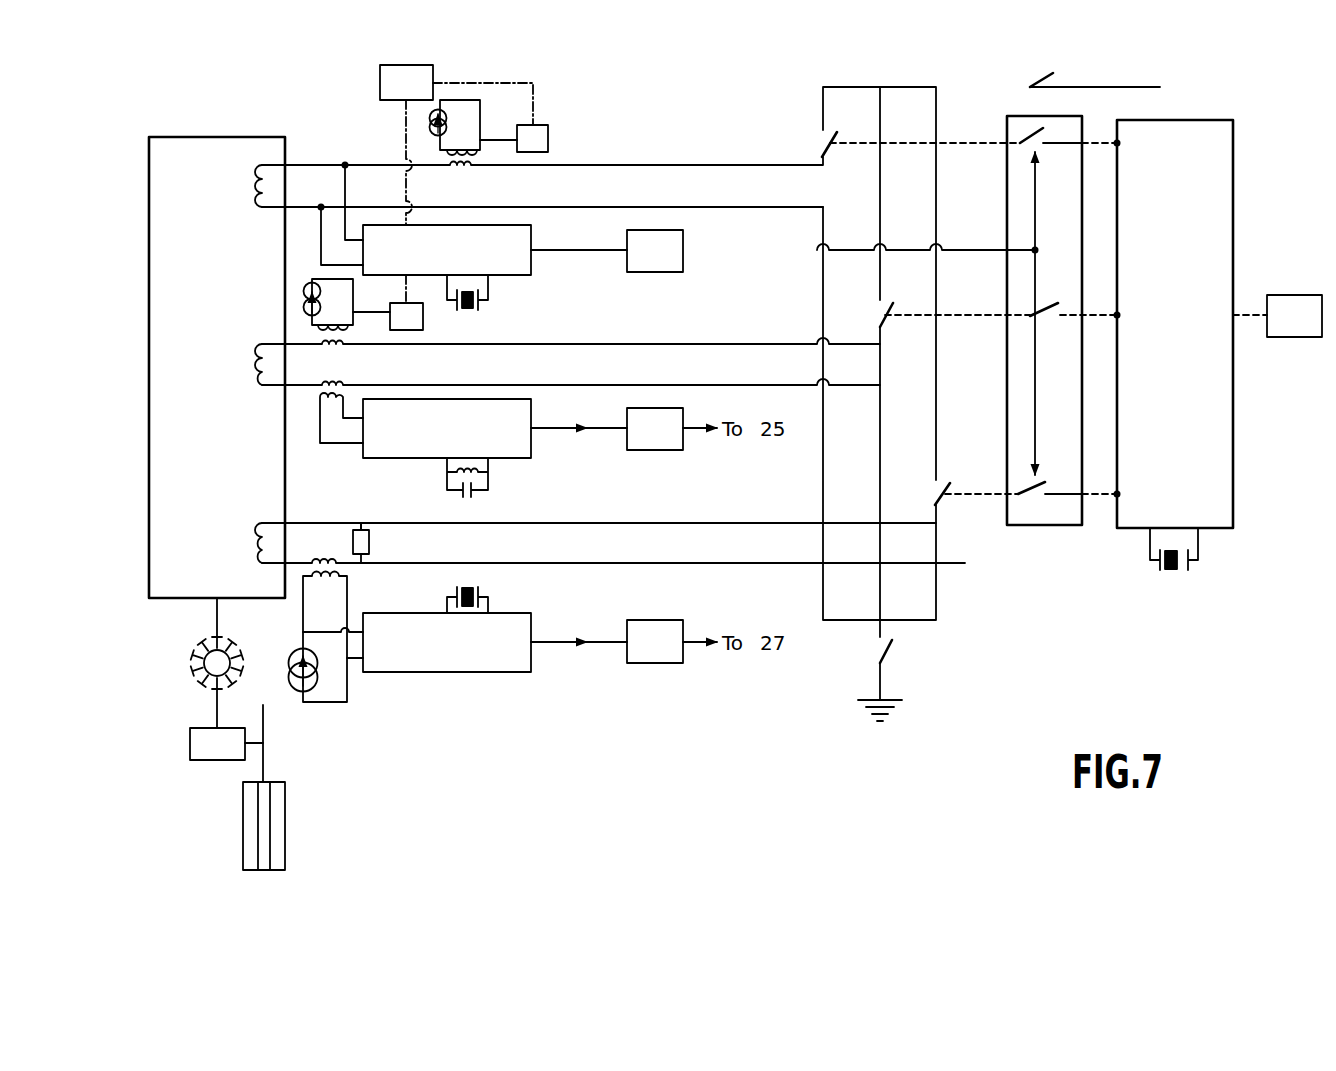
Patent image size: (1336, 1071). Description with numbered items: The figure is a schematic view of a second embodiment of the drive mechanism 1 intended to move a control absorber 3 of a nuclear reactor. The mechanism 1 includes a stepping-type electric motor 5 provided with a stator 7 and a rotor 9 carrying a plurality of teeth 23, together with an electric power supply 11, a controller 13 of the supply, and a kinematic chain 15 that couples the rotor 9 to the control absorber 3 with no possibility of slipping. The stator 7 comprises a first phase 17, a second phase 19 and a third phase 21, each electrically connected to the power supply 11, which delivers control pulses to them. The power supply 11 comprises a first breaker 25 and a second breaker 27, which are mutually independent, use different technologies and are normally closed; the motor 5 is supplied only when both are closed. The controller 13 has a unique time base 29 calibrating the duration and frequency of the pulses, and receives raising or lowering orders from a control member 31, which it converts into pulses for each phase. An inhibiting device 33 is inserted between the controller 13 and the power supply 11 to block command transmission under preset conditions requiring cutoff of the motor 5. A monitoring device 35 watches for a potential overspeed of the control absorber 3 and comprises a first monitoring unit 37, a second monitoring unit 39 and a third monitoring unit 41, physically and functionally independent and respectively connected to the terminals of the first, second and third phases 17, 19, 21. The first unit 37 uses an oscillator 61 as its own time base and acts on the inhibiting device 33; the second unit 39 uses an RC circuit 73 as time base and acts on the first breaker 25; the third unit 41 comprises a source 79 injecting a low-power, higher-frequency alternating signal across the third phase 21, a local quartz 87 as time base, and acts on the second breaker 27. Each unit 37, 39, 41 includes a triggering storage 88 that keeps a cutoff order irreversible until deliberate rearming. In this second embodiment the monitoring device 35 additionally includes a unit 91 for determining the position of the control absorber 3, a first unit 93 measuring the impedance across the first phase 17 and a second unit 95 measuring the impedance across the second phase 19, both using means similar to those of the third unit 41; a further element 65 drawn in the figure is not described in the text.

The drive mechanism 1 is at (697, 128).
The control absorber 3 is at (285, 826).
The electric motor 5 is at (128, 343).
The stator 7 is at (149, 490).
The rotor 9 is at (197, 663).
The electric power supply 11 is at (830, 632).
The controller 13 is at (1233, 220).
The kinematic chain 15 is at (190, 745).
The first phase 17 is at (258, 182).
The second phase 19 is at (258, 362).
The third phase 21 is at (258, 540).
The teeth 23 is at (240, 645).
The first breaker 25 is at (897, 653).
The second breaker 27 is at (1030, 80).
The time base 29 is at (1148, 553).
The control member 31 is at (1294, 316).
The inhibiting device 33 is at (1043, 527).
The monitoring device 35 is at (392, 693).
The first monitoring unit 37 is at (540, 237).
The second monitoring unit 39 is at (540, 412).
The third monitoring unit 41 is at (404, 612).
The oscillator 61 is at (490, 293).
The inductor 65 is at (315, 398).
The RC circuit 73 is at (490, 484).
The source 79 is at (330, 705).
The local quartz 87 is at (490, 598).
The triggering storage 88 is at (645, 274).
The position determining unit 91 is at (456, 184).
The first impedance measuring unit 93 is at (556, 128).
The second impedance measuring unit 95 is at (305, 323).